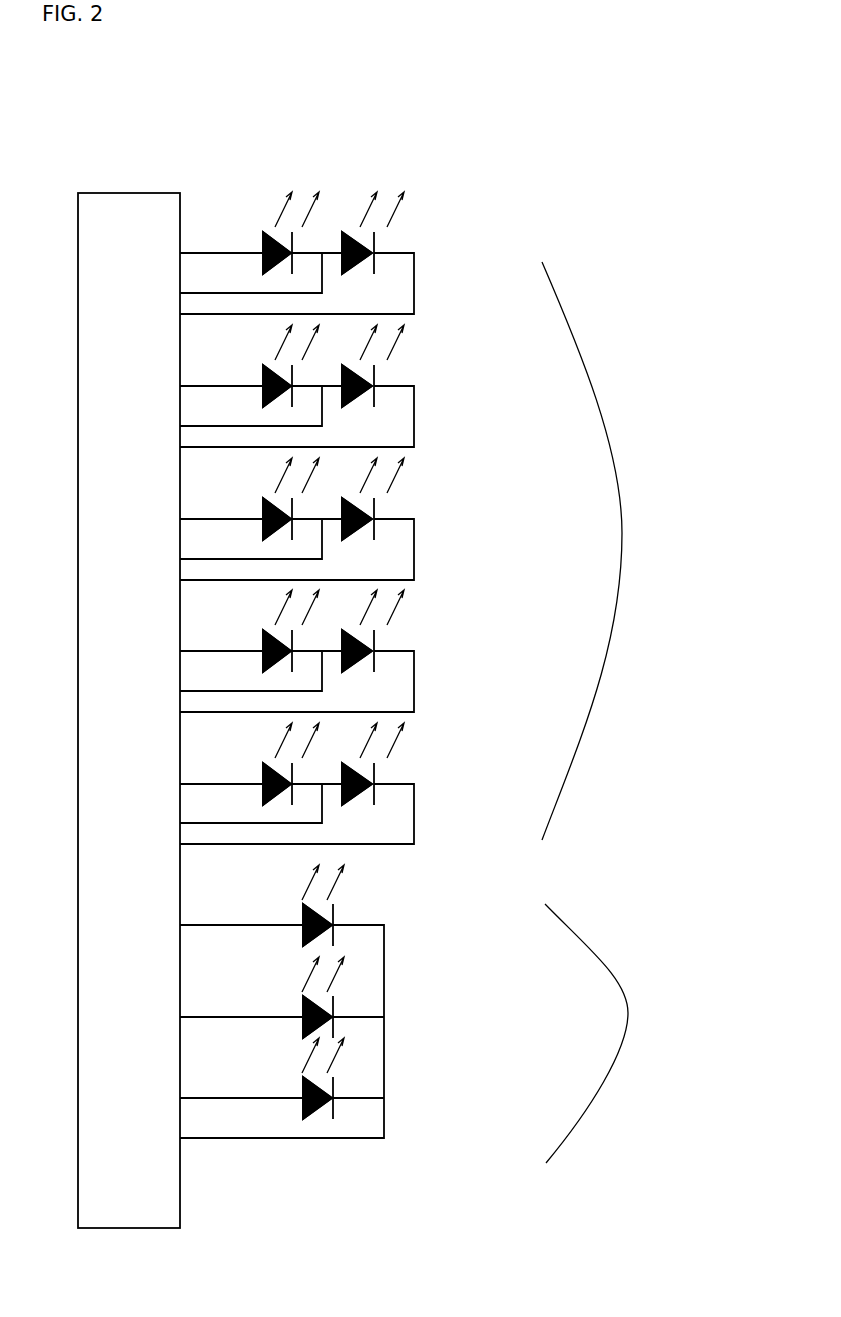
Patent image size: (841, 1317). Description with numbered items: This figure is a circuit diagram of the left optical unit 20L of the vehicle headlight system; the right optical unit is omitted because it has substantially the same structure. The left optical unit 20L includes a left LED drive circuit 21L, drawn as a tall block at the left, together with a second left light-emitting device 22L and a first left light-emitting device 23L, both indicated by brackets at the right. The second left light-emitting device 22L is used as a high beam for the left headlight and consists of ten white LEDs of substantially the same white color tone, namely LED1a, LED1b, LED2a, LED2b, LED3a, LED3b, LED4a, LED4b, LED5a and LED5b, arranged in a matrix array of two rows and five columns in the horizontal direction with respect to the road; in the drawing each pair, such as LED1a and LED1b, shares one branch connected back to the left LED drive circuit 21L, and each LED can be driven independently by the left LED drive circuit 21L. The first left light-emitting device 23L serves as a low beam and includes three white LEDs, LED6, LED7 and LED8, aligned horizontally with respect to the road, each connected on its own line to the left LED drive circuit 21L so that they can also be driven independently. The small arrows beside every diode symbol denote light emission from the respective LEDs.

The left optical unit 20L is at (293, 144).
The left LED drive circuit 21L is at (127, 193).
The second left light-emitting device 22L is at (622, 533).
The first left light-emitting device 23L is at (630, 1012).
The white LED LED1a is at (259, 237).
The white LED LED1b is at (410, 237).
The white LED LED2a is at (258, 371).
The white LED LED2b is at (401, 371).
The white LED LED3a is at (259, 504).
The white LED LED3b is at (402, 504).
The white LED LED4a is at (255, 636).
The white LED LED4b is at (401, 636).
The white LED LED5a is at (254, 770).
The white LED LED5b is at (398, 770).
The white LED LED6 is at (369, 925).
The white LED LED7 is at (369, 1017).
The white LED LED8 is at (369, 1098).